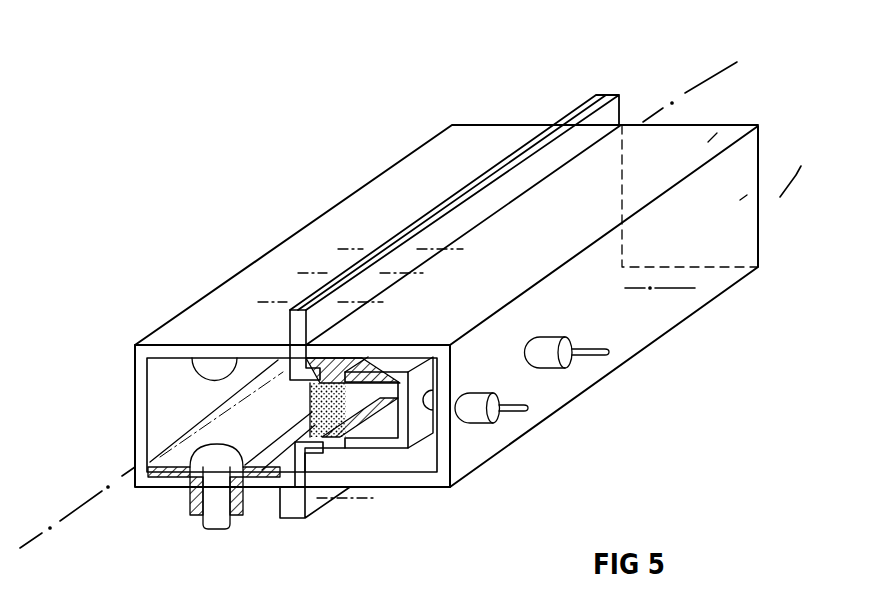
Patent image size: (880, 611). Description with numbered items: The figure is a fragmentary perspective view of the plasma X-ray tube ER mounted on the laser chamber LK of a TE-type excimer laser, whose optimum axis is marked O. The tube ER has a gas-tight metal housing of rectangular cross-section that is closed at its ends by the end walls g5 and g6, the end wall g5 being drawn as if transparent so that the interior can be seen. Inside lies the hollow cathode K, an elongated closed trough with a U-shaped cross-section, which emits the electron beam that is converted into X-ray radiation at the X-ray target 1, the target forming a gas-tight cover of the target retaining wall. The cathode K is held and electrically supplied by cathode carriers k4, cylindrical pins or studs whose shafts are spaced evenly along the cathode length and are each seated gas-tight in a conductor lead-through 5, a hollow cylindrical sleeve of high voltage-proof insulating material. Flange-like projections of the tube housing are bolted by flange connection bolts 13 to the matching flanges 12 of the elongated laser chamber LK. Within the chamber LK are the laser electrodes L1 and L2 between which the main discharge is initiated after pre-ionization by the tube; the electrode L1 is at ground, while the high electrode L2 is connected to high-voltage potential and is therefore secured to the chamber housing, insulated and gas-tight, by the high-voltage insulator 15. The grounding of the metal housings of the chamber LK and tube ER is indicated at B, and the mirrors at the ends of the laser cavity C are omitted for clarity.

The laser chamber LK is at (252, 255).
The matching flanges 12 is at (572, 107).
The flange connection bolts 13 is at (423, 273).
The X-ray target 1 is at (333, 420).
The hollow cathode K is at (380, 372).
The end wall g5 is at (420, 462).
The laser electrode L1 is at (221, 368).
The laser electrode L2 is at (210, 520).
The high-voltage insulator 15 is at (190, 495).
The laser cavity C is at (158, 390).
The conductor lead-through 5 is at (552, 340).
The cathode carrier k4 is at (604, 354).
The optimum axis O is at (67, 513).
The end wall g6 is at (727, 123).
The grounding B is at (797, 171).
The plasma X-ray tube ER is at (830, 255).